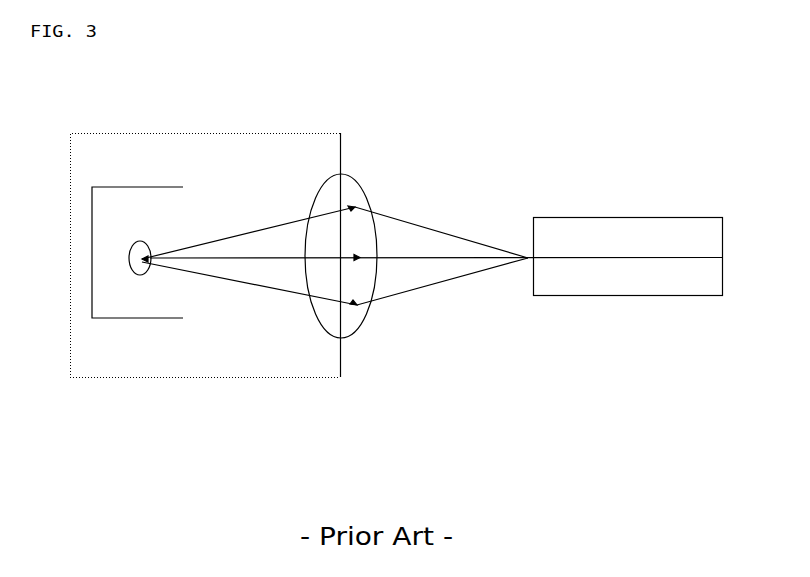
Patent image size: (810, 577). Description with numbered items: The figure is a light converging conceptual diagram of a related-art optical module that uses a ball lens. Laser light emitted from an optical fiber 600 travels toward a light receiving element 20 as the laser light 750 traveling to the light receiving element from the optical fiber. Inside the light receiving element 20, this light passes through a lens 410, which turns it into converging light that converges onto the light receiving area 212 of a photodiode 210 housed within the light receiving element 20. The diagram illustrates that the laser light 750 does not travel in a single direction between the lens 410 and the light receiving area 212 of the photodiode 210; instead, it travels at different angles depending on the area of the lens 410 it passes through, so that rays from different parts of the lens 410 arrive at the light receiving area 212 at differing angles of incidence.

The light receiving element 20 is at (68, 146).
The photodiode 210 is at (182, 306).
The light receiving area of photodiode 212 is at (133, 275).
The lens 410 is at (322, 183).
The laser light traveling to light receiving element from optical fiber 750 is at (416, 217).
The optical fiber 600 is at (557, 305).